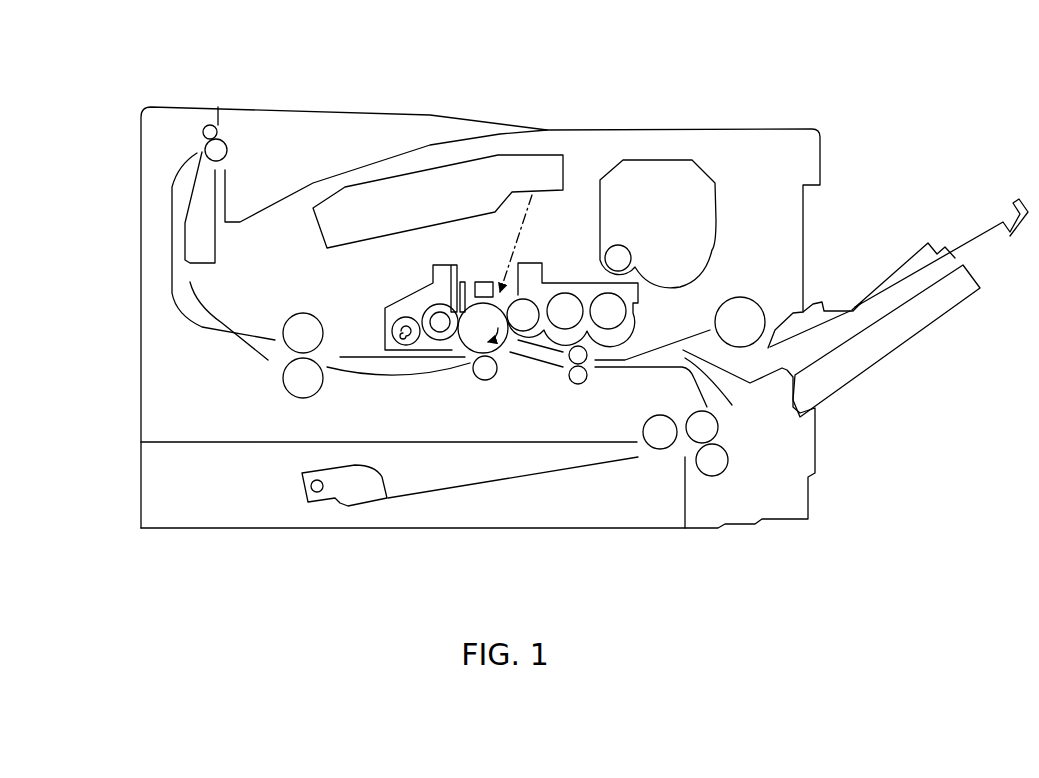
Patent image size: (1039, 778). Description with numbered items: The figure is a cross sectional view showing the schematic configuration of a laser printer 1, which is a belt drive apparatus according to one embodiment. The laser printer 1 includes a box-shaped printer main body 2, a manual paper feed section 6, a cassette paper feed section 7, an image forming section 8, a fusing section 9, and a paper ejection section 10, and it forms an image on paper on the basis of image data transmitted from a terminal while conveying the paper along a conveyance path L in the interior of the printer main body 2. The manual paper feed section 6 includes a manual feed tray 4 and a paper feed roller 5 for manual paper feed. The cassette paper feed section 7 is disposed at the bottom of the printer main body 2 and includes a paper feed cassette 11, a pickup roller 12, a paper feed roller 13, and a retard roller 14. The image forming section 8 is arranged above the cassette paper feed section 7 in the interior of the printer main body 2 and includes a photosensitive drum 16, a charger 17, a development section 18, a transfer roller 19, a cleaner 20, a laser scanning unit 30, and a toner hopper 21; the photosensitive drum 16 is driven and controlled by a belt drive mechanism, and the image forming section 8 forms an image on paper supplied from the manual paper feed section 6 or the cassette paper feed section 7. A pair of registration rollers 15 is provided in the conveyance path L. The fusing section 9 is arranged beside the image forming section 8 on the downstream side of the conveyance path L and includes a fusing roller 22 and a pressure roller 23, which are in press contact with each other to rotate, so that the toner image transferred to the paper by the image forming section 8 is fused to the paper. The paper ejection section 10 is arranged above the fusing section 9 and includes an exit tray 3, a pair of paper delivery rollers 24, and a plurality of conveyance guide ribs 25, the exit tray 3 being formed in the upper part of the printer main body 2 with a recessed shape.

The laser printer 1 is at (517, 90).
The printer main body 2 is at (262, 528).
The exit tray 3 is at (300, 192).
The manual feed tray 4 is at (973, 245).
The paper feed roller 5 is at (742, 300).
The manual paper feed section 6 is at (890, 208).
The cassette paper feed section 7 is at (767, 437).
The image forming section 8 is at (553, 262).
The fusing section 9 is at (267, 372).
The paper ejection section 10 is at (187, 130).
The paper feed cassette 11 is at (493, 482).
The pickup roller 12 is at (663, 447).
The paper feed roller 13 is at (712, 420).
The retard roller 14 is at (722, 465).
The registration rollers 15 is at (588, 365).
The photosensitive drum 16 is at (500, 352).
The charger 17 is at (483, 282).
The development section 18 is at (638, 310).
The transfer roller 19 is at (487, 380).
The cleaner 20 is at (400, 303).
The toner hopper 21 is at (653, 170).
The fusing roller 22 is at (302, 313).
The pressure roller 23 is at (288, 383).
The paper delivery rollers 24 is at (228, 143).
The conveyance guide ribs 25 is at (215, 248).
The laser scanning unit 30 is at (443, 170).
The conveyance path L is at (393, 378).